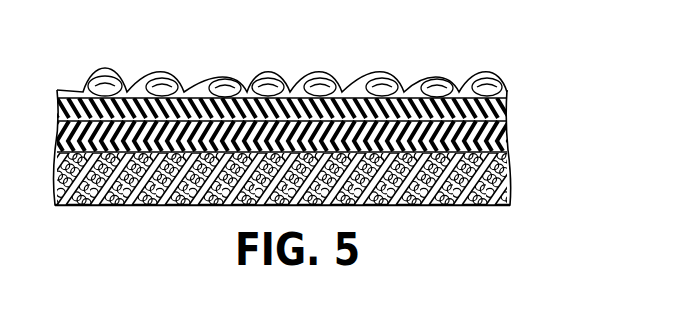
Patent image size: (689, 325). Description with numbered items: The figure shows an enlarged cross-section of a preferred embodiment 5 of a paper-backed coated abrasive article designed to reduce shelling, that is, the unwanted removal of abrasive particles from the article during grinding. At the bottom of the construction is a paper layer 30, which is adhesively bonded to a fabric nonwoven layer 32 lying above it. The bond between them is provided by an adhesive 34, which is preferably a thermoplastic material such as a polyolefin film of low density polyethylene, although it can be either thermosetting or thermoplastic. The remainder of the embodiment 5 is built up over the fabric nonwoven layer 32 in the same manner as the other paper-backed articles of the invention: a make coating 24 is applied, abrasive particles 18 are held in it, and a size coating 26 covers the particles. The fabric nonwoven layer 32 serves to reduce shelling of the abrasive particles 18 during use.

The preferred embodiment 5 is at (445, 50).
The abrasive particles 18 is at (282, 54).
The make coating 24 is at (246, 86).
The size coating 26 is at (325, 80).
The fabric nonwoven layer 32 is at (500, 128).
The adhesive 34 is at (500, 146).
The paper layer 30 is at (510, 188).